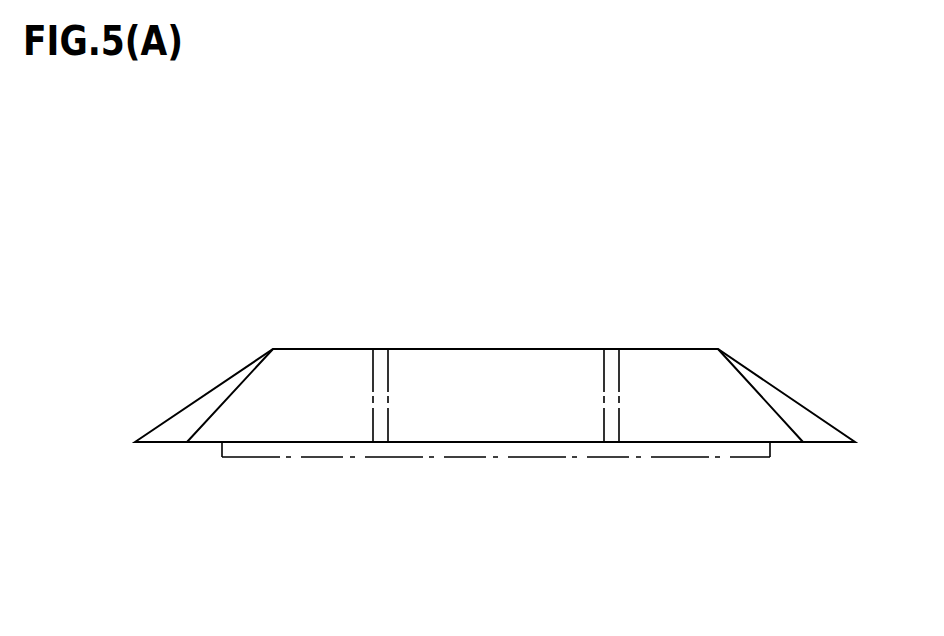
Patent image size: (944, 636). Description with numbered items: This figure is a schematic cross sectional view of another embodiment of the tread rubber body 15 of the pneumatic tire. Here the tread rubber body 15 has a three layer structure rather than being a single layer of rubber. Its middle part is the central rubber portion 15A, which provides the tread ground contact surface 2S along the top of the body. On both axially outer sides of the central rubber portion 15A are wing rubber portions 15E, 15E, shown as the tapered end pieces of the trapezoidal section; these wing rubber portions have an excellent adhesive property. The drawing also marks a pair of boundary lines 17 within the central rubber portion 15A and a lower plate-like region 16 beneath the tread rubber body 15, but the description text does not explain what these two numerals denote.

The tread rubber body 15 is at (743, 288).
The central rubber portion 15A is at (508, 385).
The wing rubber portion 15E is at (207, 403).
The tread ground contact surface 2S is at (322, 350).
The slit 17 is at (388, 375).
The base plate 16 is at (340, 457).